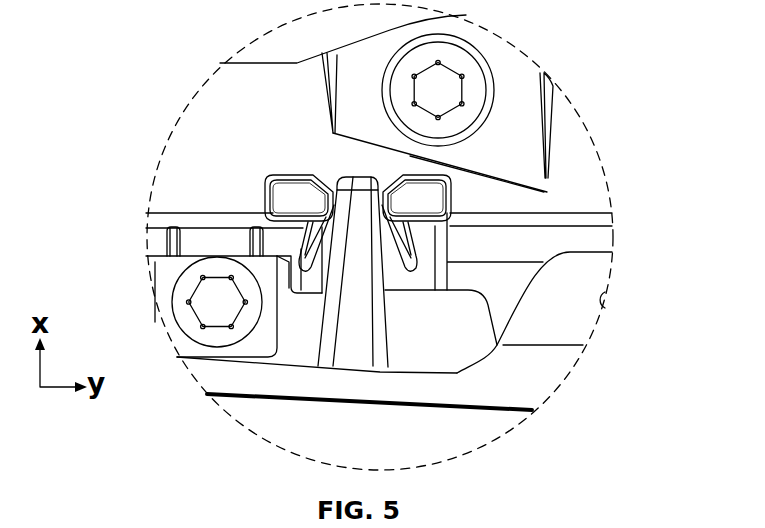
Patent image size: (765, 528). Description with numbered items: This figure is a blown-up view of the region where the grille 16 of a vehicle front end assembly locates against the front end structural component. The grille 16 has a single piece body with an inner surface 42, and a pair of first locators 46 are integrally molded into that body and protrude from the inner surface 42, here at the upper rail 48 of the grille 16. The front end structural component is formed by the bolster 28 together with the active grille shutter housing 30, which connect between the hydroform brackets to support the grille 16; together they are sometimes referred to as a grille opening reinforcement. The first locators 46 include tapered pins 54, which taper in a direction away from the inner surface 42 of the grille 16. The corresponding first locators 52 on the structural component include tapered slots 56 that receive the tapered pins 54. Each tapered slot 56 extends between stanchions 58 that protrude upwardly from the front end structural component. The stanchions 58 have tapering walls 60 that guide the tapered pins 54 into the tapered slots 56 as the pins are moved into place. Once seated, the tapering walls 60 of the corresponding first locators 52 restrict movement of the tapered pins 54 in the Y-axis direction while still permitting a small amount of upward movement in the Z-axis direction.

The grille 16 is at (278, 409).
The bolster 28 is at (424, 99).
The active grille shutter housing 30 is at (553, 116).
The inner surface 42 is at (431, 372).
The first locators 46 is at (350, 352).
The upper rail 48 is at (236, 418).
The corresponding first locators 52 is at (260, 174).
The tapered pins 54 is at (372, 328).
The tapered slots 56 is at (393, 264).
The stanchions 58 is at (301, 200).
The tapering walls 60 is at (313, 248).